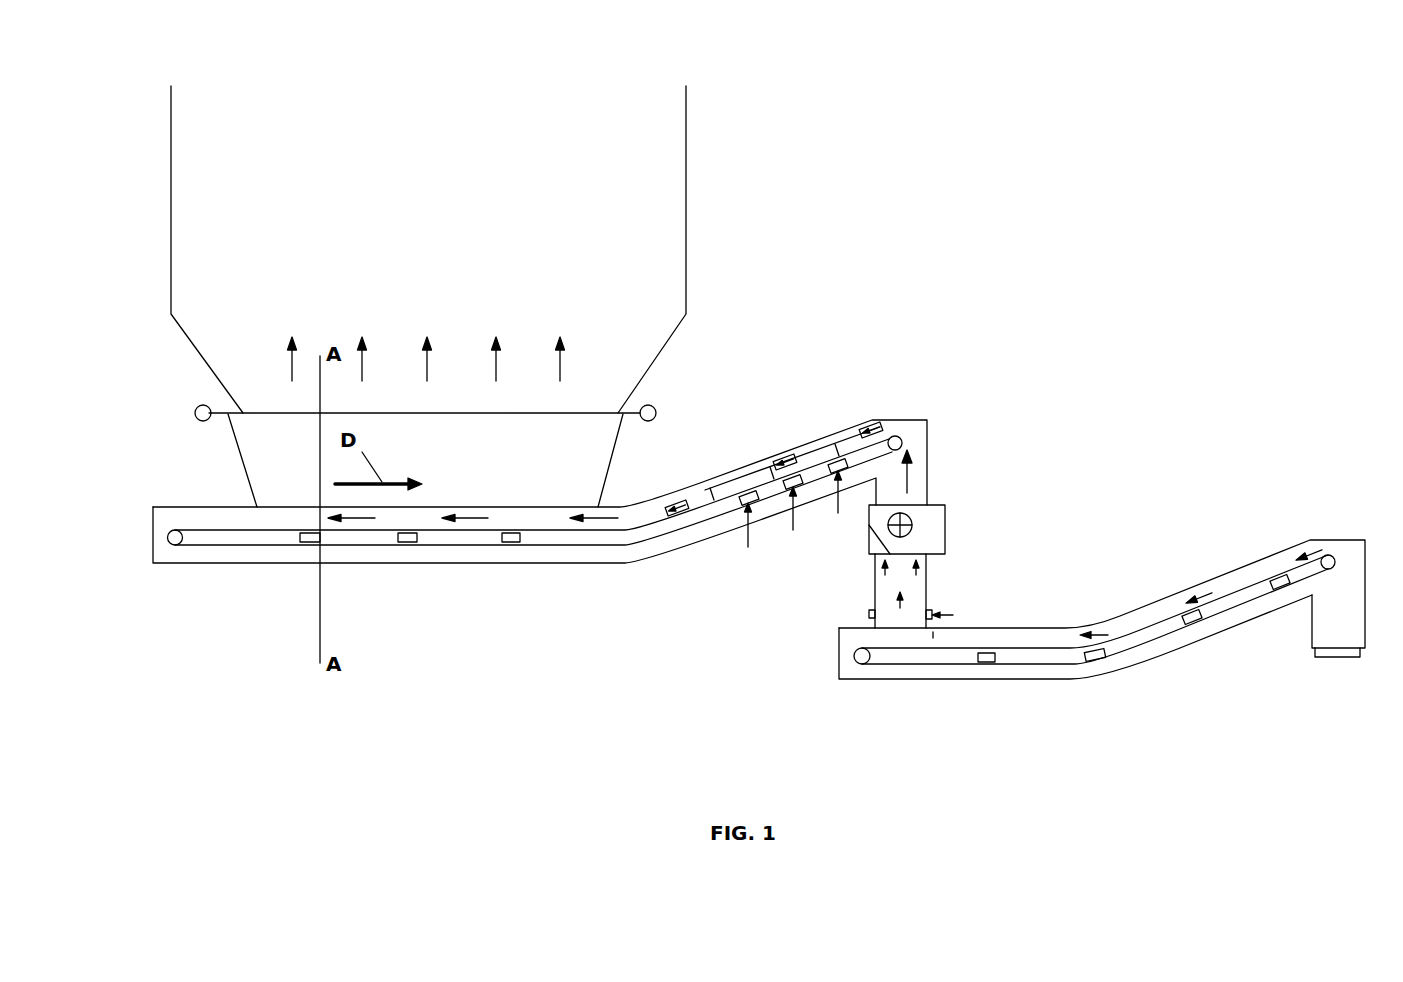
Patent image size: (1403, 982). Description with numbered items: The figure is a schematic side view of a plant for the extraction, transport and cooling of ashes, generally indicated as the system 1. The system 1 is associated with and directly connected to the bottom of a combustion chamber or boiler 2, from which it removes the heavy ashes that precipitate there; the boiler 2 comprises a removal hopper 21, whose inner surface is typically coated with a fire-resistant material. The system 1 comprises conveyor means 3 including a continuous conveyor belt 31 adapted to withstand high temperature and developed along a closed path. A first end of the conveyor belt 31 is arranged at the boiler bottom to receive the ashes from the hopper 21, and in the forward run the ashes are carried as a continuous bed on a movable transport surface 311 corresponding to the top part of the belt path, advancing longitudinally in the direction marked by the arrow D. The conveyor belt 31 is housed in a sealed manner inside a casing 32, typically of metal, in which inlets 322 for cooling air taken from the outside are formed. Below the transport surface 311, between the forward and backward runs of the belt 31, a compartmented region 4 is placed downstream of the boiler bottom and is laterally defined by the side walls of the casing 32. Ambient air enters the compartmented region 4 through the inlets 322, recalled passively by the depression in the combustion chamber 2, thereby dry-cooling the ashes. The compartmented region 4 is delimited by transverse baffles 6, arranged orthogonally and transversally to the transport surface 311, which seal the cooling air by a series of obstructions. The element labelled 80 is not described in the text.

The system for the transport of combustion waste 1 is at (511, 682).
The boiler 2 is at (452, 180).
The removal hopper 21 is at (638, 374).
The conveyor means 3 is at (551, 523).
The conveyor belt 31 is at (558, 499).
The movable transport surface 311 is at (493, 533).
The casing 32 is at (258, 563).
The inlets 322 is at (735, 503).
The compartmented region 4 is at (760, 498).
The transverse baffles 6 is at (863, 458).
The guide plate 80 is at (755, 478).